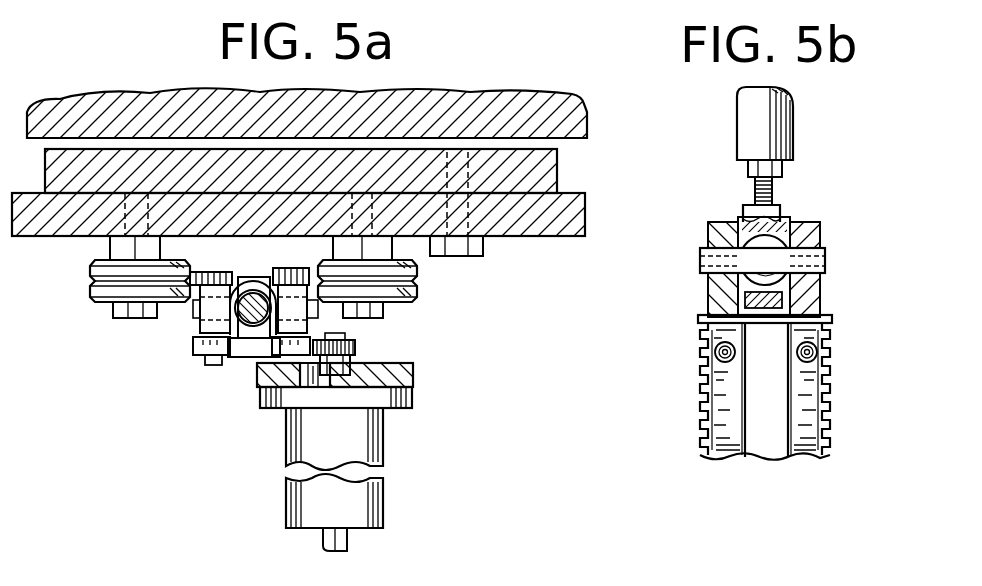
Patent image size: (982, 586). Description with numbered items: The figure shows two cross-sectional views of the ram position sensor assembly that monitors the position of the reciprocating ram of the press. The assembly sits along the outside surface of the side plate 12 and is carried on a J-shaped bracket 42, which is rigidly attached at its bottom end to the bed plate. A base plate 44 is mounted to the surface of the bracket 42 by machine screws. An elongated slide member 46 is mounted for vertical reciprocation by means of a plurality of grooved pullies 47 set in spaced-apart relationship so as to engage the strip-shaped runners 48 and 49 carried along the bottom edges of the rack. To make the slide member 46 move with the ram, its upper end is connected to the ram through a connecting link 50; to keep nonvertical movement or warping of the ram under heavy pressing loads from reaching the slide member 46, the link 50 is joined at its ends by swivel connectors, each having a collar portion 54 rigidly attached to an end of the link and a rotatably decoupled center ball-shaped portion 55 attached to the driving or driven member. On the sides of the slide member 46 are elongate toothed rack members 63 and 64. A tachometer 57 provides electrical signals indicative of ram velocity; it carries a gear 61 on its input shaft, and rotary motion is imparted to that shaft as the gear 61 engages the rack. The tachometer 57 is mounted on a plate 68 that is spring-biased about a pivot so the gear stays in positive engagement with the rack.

In FIG. 5a, the side plate 12 is at (570, 120).
In FIG. 5a, the J-shaped bracket 42 is at (560, 168).
In FIG. 5a, the base plate 44 is at (555, 218).
In FIG. 5a, the grooved pullies 47 is at (93, 300).
In FIG. 5a, the strip-shaped runner 48 is at (192, 300).
In FIG. 5a, the strip-shaped runner 49 is at (296, 276).
In FIG. 5b, the connecting link 50 is at (783, 120).
In FIG. 5b, the collar portion 54 is at (783, 210).
In FIG. 5b, the center ball-shaped portion 55 is at (772, 262).
In FIG. 5a, the tachometer 57 is at (375, 436).
In FIG. 5a, the gear 61 is at (360, 348).
In FIG. 5a, the toothed rack member 63 is at (292, 345).
In FIG. 5b, the toothed rack member 63 is at (812, 398).
In FIG. 5a, the toothed rack member 64 is at (205, 345).
In FIG. 5b, the toothed rack member 64 is at (703, 380).
In FIG. 5a, the plate 68 is at (400, 375).
In FIG. 5b, the elongated slide member 46 is at (775, 465).